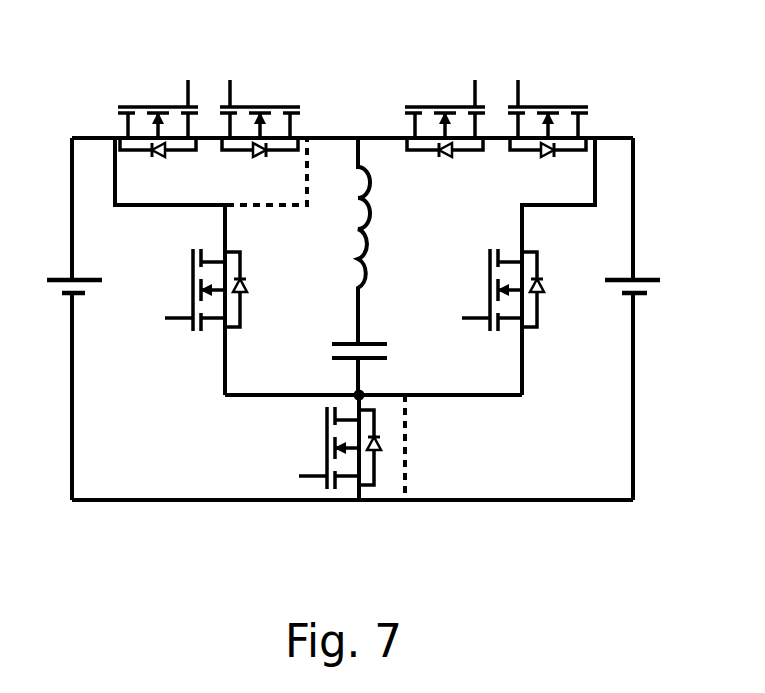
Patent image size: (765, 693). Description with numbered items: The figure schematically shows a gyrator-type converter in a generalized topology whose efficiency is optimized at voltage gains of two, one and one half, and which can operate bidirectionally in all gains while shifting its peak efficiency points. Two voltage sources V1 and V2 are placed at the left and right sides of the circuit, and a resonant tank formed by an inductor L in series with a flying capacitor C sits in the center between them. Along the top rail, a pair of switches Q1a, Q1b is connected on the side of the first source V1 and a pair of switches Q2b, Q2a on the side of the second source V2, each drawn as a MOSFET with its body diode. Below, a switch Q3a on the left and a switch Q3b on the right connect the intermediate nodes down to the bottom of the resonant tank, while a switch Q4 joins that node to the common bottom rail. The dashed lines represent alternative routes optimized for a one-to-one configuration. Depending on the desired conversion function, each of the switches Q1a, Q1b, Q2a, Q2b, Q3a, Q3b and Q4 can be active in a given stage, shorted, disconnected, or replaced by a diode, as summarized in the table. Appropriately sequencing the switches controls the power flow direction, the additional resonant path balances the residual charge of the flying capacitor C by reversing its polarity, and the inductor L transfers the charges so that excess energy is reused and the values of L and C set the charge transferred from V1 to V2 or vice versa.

The switch Q1a is at (158, 106).
The switch Q1b is at (261, 106).
The switch Q2a is at (549, 106).
The switch Q2b is at (445, 106).
The switch Q3a is at (190, 290).
The switch Q3b is at (486, 290).
The switch Q4 is at (319, 448).
The inductor L is at (346, 241).
The capacitor C is at (354, 343).
The voltage source V1 is at (91, 263).
The voltage source V2 is at (622, 260).